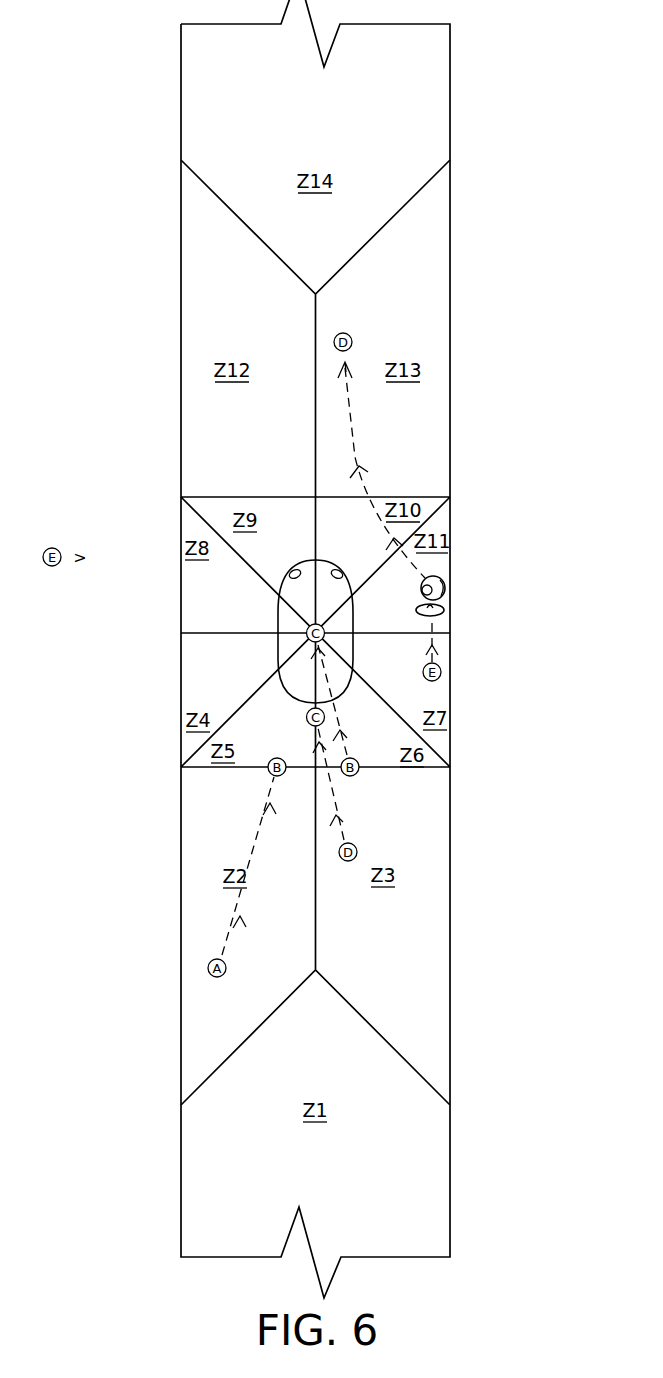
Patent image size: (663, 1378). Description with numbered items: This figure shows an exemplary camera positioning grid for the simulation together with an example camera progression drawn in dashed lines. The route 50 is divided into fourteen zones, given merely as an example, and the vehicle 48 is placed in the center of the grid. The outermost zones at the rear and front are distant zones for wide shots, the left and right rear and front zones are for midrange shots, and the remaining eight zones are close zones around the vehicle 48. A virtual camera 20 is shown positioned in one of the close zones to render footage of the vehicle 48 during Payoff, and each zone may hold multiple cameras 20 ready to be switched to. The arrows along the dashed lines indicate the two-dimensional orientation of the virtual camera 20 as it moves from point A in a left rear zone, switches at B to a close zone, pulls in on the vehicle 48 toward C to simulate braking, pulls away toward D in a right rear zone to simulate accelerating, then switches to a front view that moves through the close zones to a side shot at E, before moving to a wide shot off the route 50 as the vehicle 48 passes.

The route 50 is at (450, 276).
The vehicle 48 is at (327, 560).
The virtual camera 20 is at (445, 578).